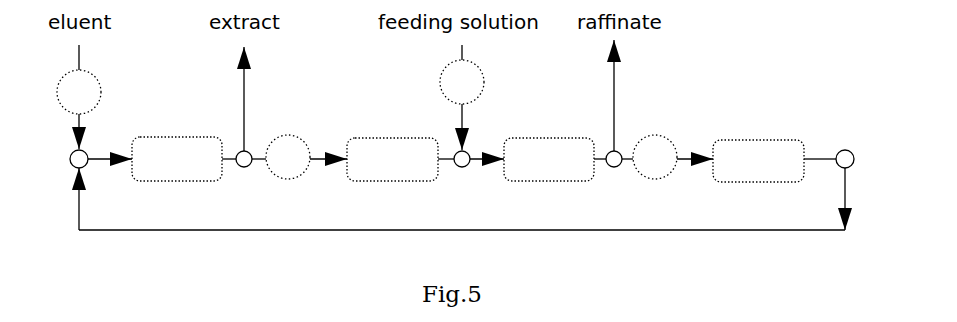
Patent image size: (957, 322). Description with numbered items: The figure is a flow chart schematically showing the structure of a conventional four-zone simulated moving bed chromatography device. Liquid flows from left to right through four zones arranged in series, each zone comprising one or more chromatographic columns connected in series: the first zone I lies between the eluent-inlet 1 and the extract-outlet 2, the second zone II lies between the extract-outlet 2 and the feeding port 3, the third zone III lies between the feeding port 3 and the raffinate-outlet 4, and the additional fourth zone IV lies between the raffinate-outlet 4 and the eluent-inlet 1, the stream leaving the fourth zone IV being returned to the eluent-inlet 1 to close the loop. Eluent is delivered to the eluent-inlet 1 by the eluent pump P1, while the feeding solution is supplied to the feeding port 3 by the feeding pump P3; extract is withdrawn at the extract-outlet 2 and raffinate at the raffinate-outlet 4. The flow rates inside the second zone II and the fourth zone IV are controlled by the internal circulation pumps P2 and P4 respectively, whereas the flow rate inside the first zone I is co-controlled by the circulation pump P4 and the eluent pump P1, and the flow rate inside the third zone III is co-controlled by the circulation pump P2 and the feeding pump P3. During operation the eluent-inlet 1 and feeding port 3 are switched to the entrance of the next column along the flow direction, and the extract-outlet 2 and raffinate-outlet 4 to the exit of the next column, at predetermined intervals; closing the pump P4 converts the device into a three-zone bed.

The eluent-inlet 1 is at (66, 159).
The extract-outlet 2 is at (244, 124).
The feeding port 3 is at (462, 176).
The raffinate-outlet 4 is at (613, 120).
The eluent pump P1 is at (79, 97).
The internal circulation pump of the second zone P2 is at (288, 157).
The feeding pump P3 is at (462, 97).
The internal circulation pump of the fourth zone P4 is at (655, 157).
The first zone I is at (177, 159).
The second zone II is at (392, 159).
The third zone III is at (549, 159).
The fourth zone IV is at (758, 161).